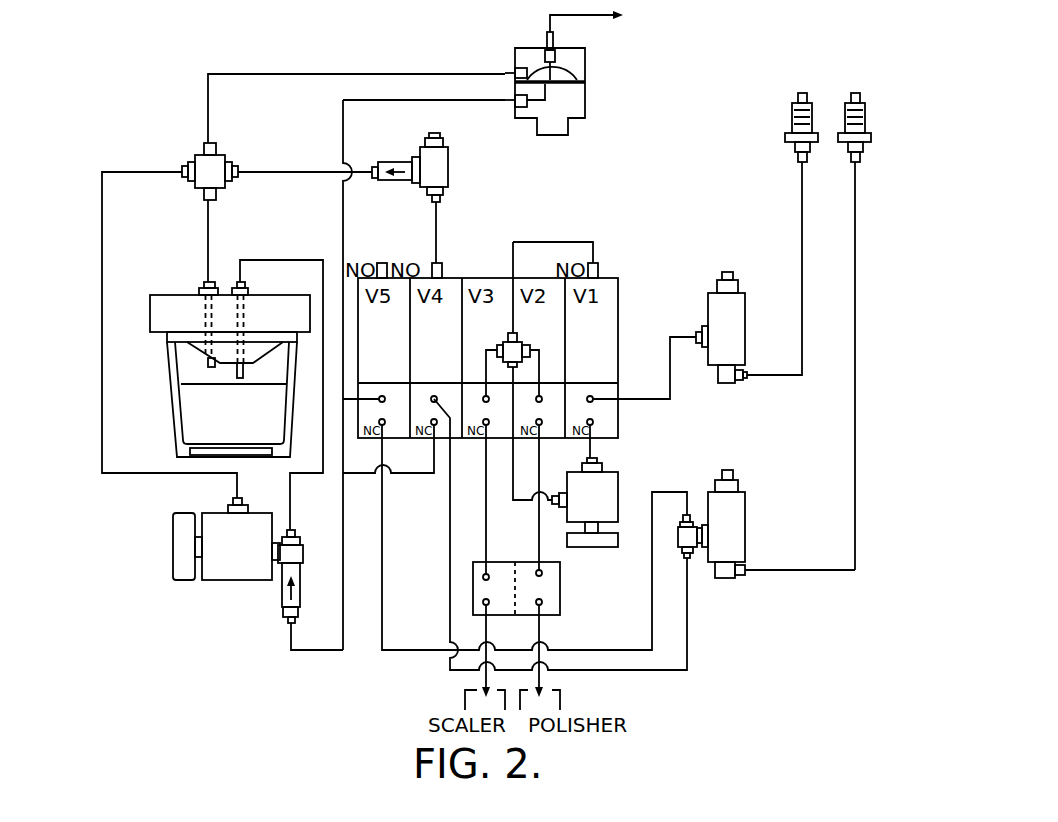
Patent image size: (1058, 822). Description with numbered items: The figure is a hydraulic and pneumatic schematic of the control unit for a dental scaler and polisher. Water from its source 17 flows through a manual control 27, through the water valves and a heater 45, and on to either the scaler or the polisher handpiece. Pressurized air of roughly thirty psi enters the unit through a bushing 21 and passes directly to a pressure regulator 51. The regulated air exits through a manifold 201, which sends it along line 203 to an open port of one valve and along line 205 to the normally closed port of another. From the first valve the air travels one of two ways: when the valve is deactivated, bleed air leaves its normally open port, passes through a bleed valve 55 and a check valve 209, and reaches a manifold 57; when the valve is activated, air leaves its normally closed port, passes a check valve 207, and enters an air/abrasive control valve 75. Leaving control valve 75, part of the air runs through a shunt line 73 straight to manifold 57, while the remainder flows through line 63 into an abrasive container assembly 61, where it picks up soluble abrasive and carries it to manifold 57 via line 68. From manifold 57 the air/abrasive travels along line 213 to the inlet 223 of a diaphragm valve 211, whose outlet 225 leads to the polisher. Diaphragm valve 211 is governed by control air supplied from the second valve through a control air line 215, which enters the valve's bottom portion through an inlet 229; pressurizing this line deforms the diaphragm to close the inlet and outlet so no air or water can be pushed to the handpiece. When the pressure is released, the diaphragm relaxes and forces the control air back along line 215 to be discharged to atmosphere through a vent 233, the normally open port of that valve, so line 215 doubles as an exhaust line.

The line 213 is at (317, 74).
The manifold 57 is at (218, 163).
The shunt line 73 is at (102, 270).
The line 68 is at (208, 257).
The line 63 is at (268, 260).
The abrasive container assembly 61 is at (165, 367).
The air/abrasive control valve 75 is at (227, 568).
The check valve 207 is at (303, 593).
The control air line 215 is at (343, 234).
The check valve 209 is at (376, 179).
The bleed valve 55 is at (448, 163).
The vent 233 is at (382, 263).
The line 205 is at (395, 632).
The line 203 is at (647, 670).
The heater 45 is at (560, 590).
The manual control 27 is at (605, 493).
The pressure regulator 51 is at (745, 530).
The manifold 201 is at (697, 555).
The water source 17 is at (802, 206).
The bushing 21 is at (870, 112).
The diaphragm valve 211 is at (608, 88).
The outlet 225 is at (546, 36).
The inlet 223 is at (512, 68).
The inlet 229 is at (508, 108).